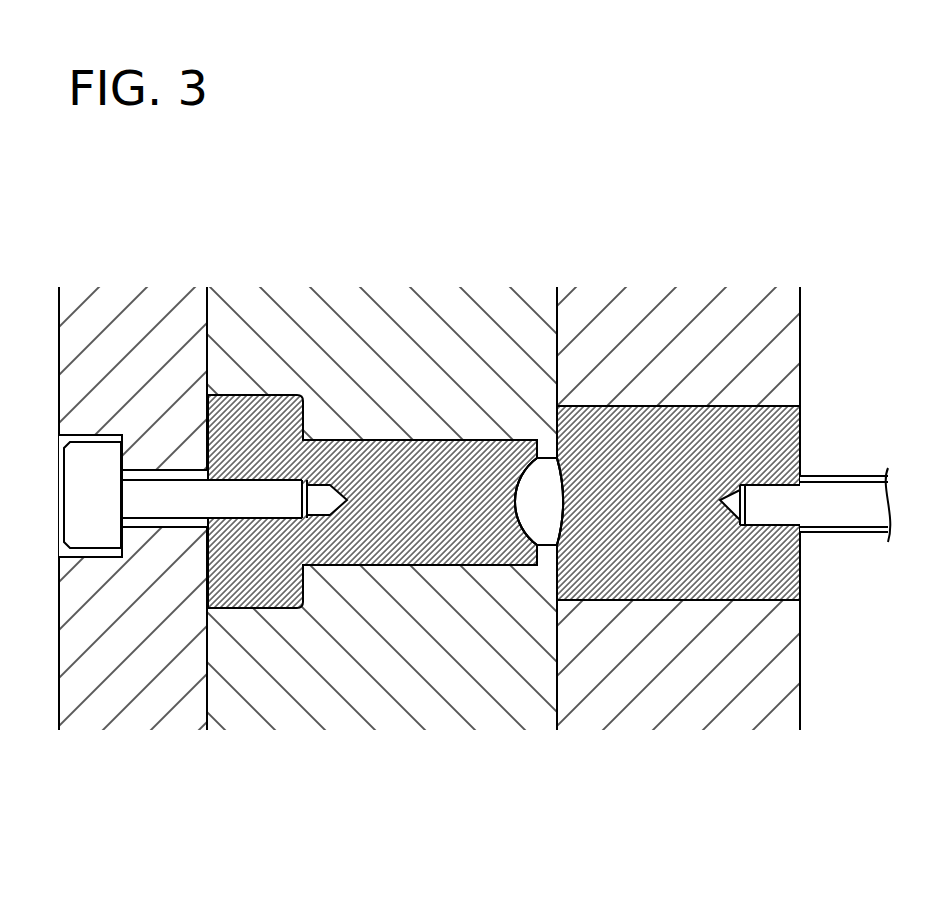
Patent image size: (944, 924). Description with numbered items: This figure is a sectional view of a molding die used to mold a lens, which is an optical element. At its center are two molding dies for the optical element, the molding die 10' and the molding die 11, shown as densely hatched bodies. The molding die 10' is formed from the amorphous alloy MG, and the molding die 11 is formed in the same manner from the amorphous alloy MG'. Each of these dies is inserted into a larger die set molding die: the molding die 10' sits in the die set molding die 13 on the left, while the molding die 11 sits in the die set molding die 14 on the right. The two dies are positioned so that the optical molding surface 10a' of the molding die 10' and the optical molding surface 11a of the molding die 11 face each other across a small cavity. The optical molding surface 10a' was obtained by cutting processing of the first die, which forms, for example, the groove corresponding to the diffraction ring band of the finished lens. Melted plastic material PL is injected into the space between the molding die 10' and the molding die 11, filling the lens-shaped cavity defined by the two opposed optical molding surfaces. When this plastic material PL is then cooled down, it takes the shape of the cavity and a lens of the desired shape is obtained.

The molding die for the optical element 10' is at (372, 604).
The optical molding surface 10a' is at (479, 389).
The melted plastic material PL is at (547, 458).
The molding die for the optical element 11 is at (740, 600).
The optical molding surface 11a is at (567, 468).
The die set molding die 13 is at (436, 668).
The die set molding die 14 is at (646, 668).
The amorphous alloy MG is at (399, 326).
The amorphous alloy MG' is at (678, 309).